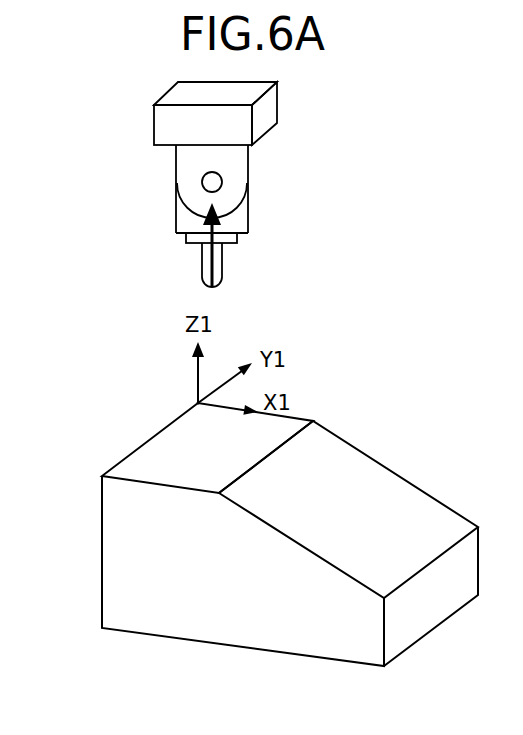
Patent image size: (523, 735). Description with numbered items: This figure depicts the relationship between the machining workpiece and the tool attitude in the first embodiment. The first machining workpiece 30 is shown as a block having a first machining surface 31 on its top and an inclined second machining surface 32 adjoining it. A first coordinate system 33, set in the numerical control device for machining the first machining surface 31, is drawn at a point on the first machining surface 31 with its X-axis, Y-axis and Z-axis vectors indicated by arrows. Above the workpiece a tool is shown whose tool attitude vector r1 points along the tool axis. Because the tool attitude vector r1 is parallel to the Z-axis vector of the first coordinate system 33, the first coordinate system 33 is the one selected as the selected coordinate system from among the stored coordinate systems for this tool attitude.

The tool attitude vector r1 is at (217, 263).
The first machining workpiece 30 is at (261, 510).
The first machining surface 31 is at (167, 442).
The second machining surface 32 is at (357, 460).
The first coordinate system 33 is at (195, 398).